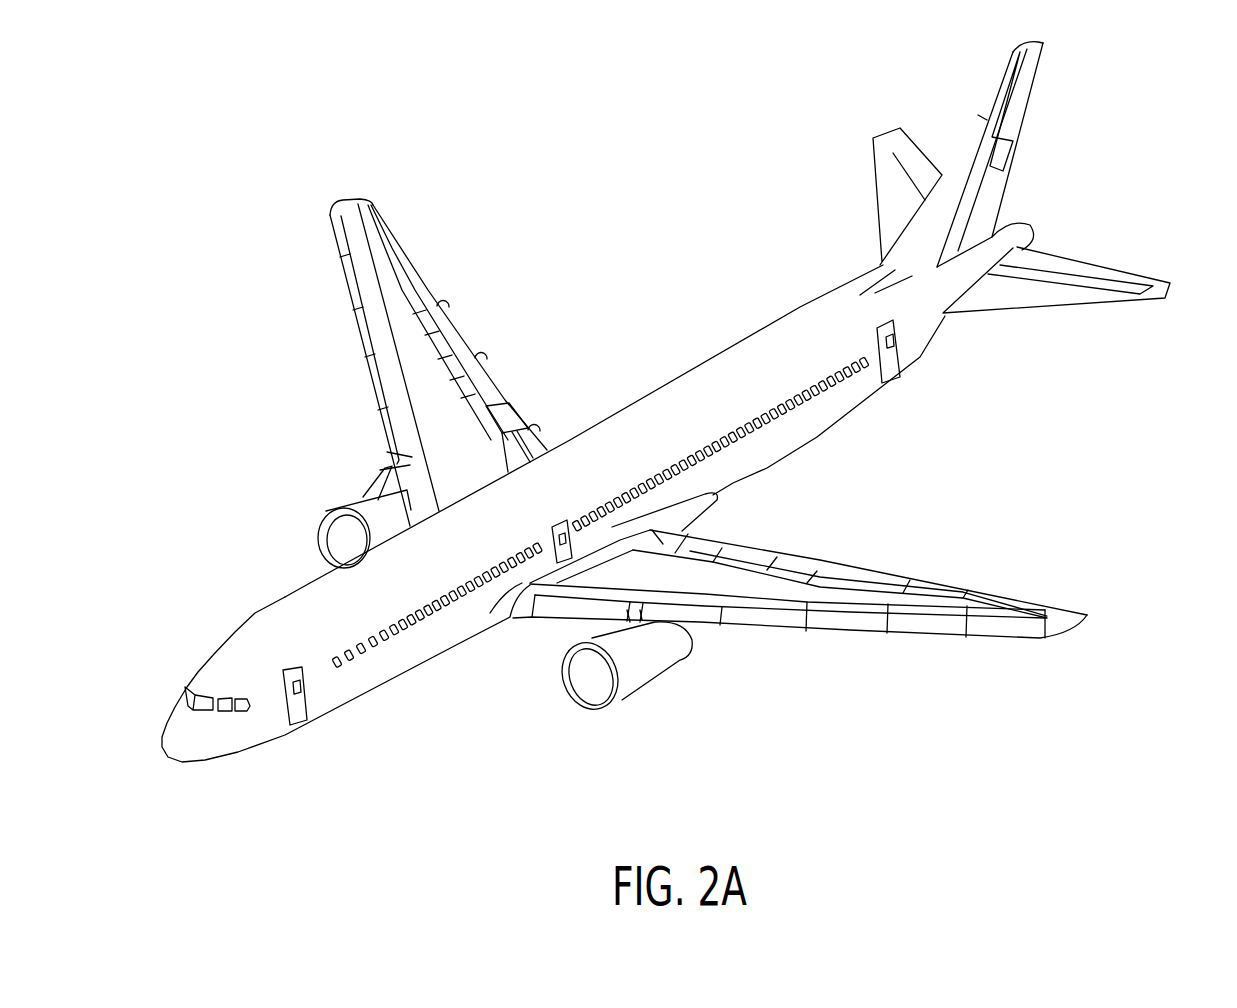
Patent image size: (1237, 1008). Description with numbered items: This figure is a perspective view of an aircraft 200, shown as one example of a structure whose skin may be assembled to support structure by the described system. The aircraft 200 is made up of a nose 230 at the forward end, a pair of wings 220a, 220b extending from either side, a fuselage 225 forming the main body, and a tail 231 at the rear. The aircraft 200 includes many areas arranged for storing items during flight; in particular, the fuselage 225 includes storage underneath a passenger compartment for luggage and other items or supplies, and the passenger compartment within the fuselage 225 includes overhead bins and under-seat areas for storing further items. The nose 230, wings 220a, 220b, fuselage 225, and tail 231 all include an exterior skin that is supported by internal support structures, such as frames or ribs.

The aircraft 200 is at (588, 327).
The wing 220a is at (372, 201).
The wing 220b is at (1090, 615).
The fuselage 225 is at (764, 448).
The nose 230 is at (183, 762).
The tail 231 is at (1048, 50).